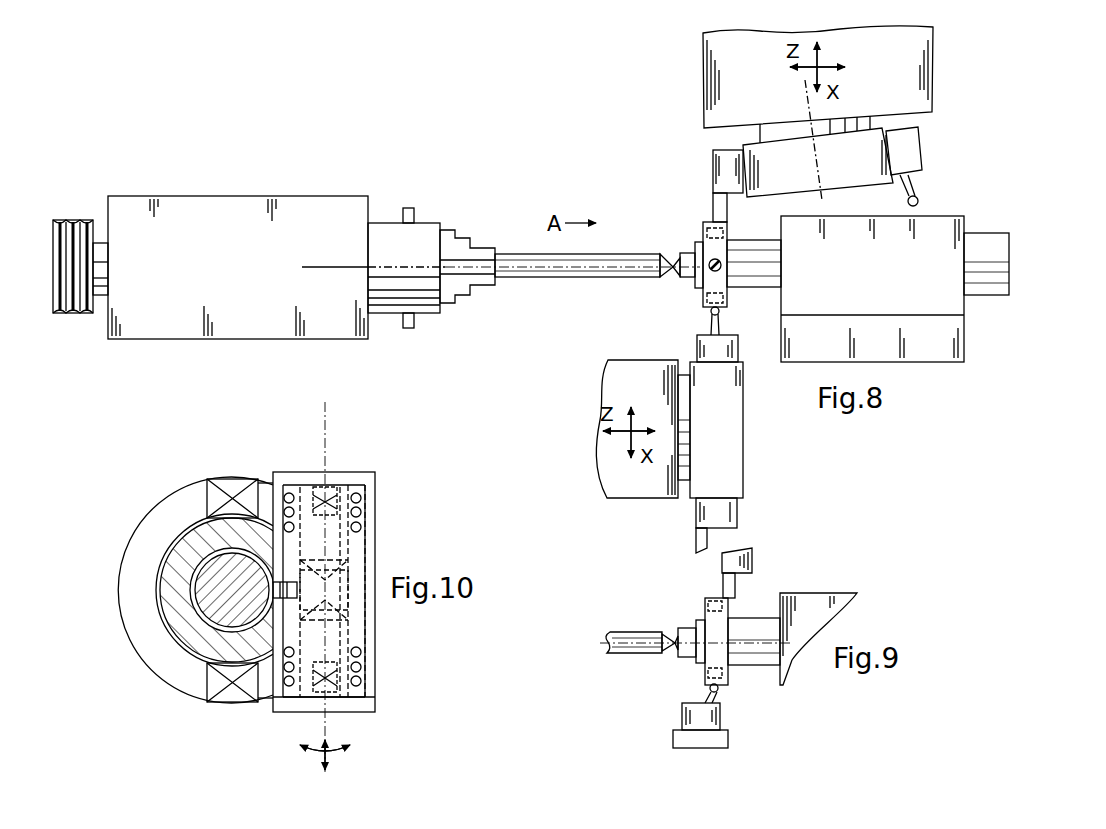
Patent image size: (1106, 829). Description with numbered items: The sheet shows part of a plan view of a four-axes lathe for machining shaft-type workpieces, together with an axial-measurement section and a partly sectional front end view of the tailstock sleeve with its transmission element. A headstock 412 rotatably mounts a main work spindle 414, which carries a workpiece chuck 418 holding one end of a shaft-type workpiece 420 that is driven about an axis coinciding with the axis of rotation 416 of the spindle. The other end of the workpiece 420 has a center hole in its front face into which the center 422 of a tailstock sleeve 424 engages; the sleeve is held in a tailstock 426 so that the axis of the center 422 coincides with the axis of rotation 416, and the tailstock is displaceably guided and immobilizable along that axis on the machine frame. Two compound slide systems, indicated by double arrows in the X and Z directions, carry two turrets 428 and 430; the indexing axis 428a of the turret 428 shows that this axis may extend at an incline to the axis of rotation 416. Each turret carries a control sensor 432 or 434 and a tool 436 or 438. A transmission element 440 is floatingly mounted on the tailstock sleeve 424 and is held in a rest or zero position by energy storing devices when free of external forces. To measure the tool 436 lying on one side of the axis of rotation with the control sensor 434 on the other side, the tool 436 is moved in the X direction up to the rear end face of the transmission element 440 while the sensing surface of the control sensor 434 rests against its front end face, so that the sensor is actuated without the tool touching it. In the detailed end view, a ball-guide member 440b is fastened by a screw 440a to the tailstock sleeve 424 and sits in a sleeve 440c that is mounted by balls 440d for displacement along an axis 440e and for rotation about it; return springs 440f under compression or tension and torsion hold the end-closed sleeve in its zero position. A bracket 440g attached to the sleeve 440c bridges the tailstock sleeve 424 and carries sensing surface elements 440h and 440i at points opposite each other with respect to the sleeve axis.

In FIG. 8, the headstock 412 is at (220, 199).
In FIG. 8, the main work spindle 414 is at (100, 247).
In FIG. 8, the axis of rotation 416 is at (320, 267).
In FIG. 8, the workpiece chuck 418 is at (452, 229).
In FIG. 8, the shaft-type workpiece 420 is at (520, 254).
In FIG. 9, the shaft-type workpiece 420 is at (627, 648).
In FIG. 8, the center 422 is at (668, 255).
In FIG. 9, the center 422 is at (692, 648).
In FIG. 8, the tailstock sleeve 424 is at (783, 275).
In FIG. 9, the tailstock sleeve 424 is at (760, 650).
In FIG. 10, the tailstock sleeve 424 is at (182, 625).
In FIG. 8, the tailstock 426 is at (950, 215).
In FIG. 9, the tailstock 426 is at (835, 608).
In FIG. 8, the turret 428 is at (744, 147).
In FIG. 8, the indexing axis 428a is at (805, 88).
In FIG. 8, the turret 430 is at (737, 439).
In FIG. 9, the turret 430 is at (708, 740).
In FIG. 8, the control sensor 432 is at (920, 183).
In FIG. 8, the control sensor 434 is at (710, 322).
In FIG. 9, the control sensor 434 is at (697, 690).
In FIG. 8, the tool 436 is at (713, 200).
In FIG. 9, the tool 436 is at (737, 584).
In FIG. 8, the tool 438 is at (707, 541).
In FIG. 8, the transmission element 440 is at (783, 265).
In FIG. 9, the transmission element 440 is at (708, 653).
In FIG. 10, the transmission element 440 is at (372, 566).
In FIG. 10, the screw 440a is at (360, 548).
In FIG. 10, the ball-guide member 440b is at (362, 512).
In FIG. 10, the sleeve 440c is at (366, 667).
In FIG. 10, the balls 440d is at (362, 650).
In FIG. 10, the axis 440e is at (327, 723).
In FIG. 10, the return springs 440f is at (313, 470).
In FIG. 10, the bracket 440g is at (125, 603).
In FIG. 8, the sensing surface element 440h is at (730, 298).
In FIG. 9, the sensing surface element 440h is at (722, 686).
In FIG. 10, the sensing surface element 440h is at (238, 703).
In FIG. 8, the sensing surface element 440i is at (735, 230).
In FIG. 9, the sensing surface element 440i is at (700, 603).
In FIG. 10, the sensing surface element 440i is at (234, 478).